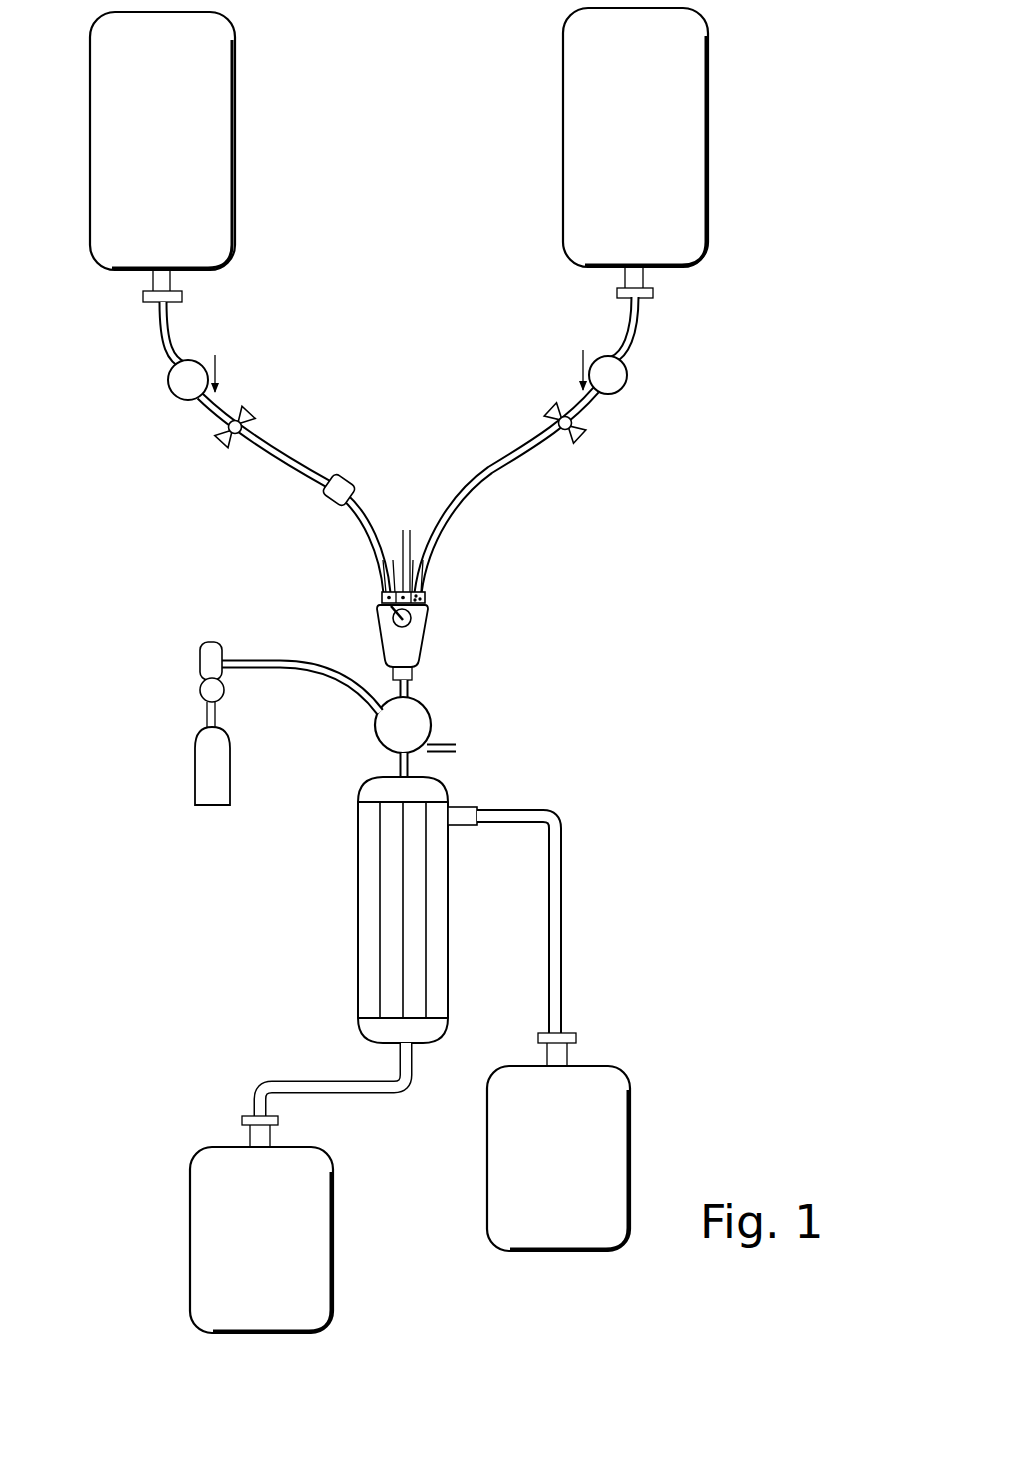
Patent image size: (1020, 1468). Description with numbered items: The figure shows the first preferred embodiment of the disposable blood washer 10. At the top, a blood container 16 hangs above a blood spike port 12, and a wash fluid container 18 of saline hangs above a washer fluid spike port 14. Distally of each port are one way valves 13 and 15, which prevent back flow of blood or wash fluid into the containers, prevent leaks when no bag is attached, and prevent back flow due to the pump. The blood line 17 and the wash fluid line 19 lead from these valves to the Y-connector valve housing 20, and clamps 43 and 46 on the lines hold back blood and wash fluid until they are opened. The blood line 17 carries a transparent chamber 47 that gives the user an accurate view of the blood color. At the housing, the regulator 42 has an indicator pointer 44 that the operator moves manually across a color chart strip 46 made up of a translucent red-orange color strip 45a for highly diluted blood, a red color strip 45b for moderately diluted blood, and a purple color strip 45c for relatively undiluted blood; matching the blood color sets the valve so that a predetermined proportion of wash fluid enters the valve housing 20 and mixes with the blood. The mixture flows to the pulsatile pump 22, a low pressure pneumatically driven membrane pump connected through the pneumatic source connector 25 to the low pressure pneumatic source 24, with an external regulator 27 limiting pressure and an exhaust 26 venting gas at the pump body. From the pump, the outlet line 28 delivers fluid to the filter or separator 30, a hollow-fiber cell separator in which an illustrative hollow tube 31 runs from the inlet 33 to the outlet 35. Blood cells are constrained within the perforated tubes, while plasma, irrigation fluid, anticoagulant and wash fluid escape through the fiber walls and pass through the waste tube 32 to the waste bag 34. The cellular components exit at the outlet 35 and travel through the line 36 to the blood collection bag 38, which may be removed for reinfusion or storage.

The disposable blood washer 10 is at (585, 657).
The blood spike port 12 is at (172, 282).
The one way valve 13 is at (170, 386).
The washer fluid spike port 14 is at (645, 276).
The one way valve 15 is at (627, 381).
The blood container 16 is at (236, 122).
The blood line 17 is at (298, 474).
The wash fluid container 18 is at (563, 137).
The wash fluid line 19 is at (500, 470).
The Y-connector valve housing 20 is at (428, 645).
The pulsatile pump 22 is at (432, 720).
The low pressure pneumatic source 24 is at (212, 766).
The pneumatic source connector 25 is at (223, 652).
The exhaust 26 is at (450, 757).
The external regulator 27 is at (224, 692).
The pump outlet line 28 is at (394, 760).
The filter or separator 30 is at (352, 913).
The hollow tube 31 is at (427, 920).
The waste tube 32 is at (527, 805).
The inlet 33 is at (368, 792).
The waste bag 34 is at (595, 1065).
The outlet 35 is at (437, 1028).
The blood collection line 36 is at (413, 1062).
The blood collection bag 38 is at (333, 1232).
The regulator 42 is at (428, 622).
The clamp 43 is at (250, 412).
The indicator pointer 44 is at (392, 611).
The color strip 45a is at (383, 590).
The color strip 45b is at (405, 565).
The color strip 45c is at (425, 580).
The color chart strip 46 is at (548, 410).
The chamber 47 is at (355, 484).